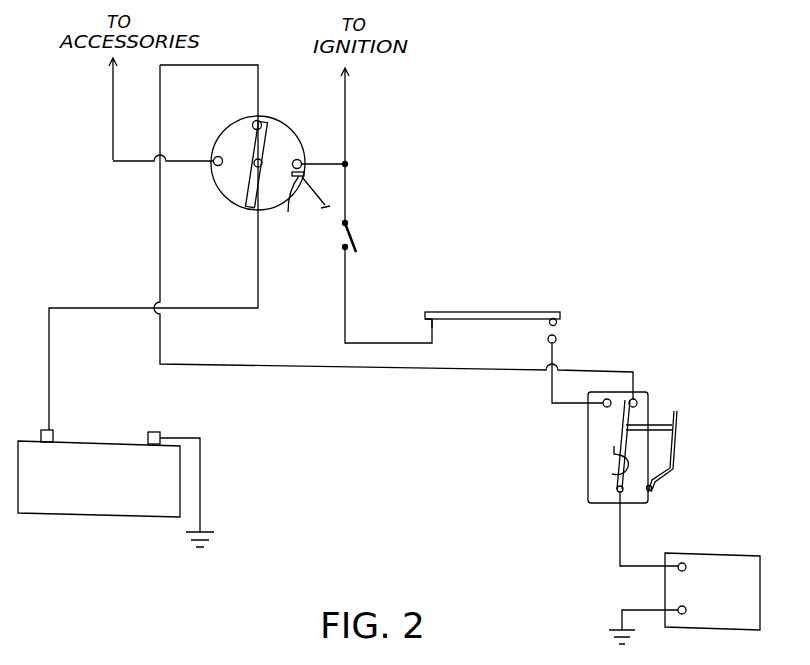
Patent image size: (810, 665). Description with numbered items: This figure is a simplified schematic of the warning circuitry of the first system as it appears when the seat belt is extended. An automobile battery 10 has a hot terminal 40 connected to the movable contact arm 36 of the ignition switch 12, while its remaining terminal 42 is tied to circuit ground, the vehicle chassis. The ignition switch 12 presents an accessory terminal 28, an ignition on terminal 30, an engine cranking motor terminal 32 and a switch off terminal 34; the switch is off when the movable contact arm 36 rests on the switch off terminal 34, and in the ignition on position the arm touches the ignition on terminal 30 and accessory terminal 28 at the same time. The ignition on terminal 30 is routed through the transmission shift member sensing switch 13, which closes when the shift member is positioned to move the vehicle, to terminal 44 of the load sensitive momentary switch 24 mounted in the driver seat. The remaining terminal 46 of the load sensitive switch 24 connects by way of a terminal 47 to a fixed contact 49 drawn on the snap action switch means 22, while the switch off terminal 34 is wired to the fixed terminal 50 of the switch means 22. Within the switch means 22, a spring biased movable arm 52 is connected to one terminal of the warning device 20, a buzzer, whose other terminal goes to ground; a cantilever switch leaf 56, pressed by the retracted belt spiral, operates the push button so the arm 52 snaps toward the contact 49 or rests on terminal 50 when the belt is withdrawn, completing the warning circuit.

The automobile battery 10 is at (90, 516).
The ignition switch 12 is at (273, 105).
The transmission shift member sensing switch 13 is at (352, 238).
The warning device 20 is at (756, 560).
The snap action single pole double throw switch means 22 is at (688, 493).
The load sensitive momentary switch 24 is at (456, 311).
The accessory terminal 28 is at (214, 168).
The ignition on terminal 30 is at (300, 158).
The engine cranking motor terminal 32 is at (301, 211).
The switch off terminal 34 is at (257, 118).
The movable contact arm 36 is at (252, 145).
The hot terminal 40 is at (43, 434).
The battery terminal 42 is at (159, 431).
The terminal of load sensitive switch 44 is at (430, 320).
The terminal of load sensitive switch 46 is at (560, 325).
The terminal 47 is at (557, 342).
The relay contact 49 is at (603, 406).
The fixed terminal 50 is at (637, 400).
The spring biased movable arm 52 is at (617, 492).
The cantilever switch leaf 56 is at (676, 427).